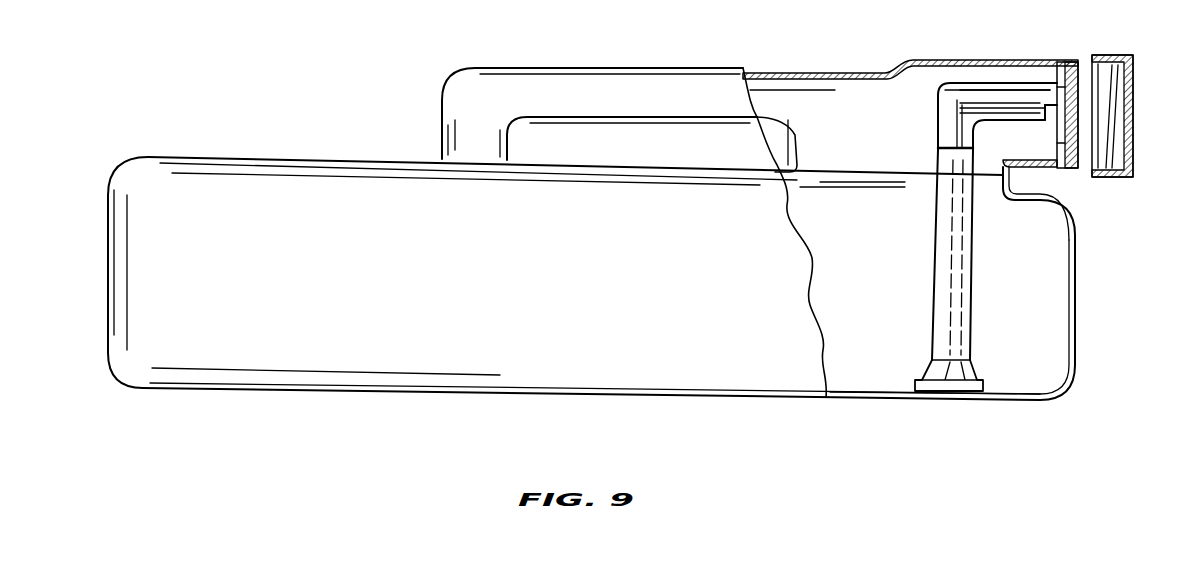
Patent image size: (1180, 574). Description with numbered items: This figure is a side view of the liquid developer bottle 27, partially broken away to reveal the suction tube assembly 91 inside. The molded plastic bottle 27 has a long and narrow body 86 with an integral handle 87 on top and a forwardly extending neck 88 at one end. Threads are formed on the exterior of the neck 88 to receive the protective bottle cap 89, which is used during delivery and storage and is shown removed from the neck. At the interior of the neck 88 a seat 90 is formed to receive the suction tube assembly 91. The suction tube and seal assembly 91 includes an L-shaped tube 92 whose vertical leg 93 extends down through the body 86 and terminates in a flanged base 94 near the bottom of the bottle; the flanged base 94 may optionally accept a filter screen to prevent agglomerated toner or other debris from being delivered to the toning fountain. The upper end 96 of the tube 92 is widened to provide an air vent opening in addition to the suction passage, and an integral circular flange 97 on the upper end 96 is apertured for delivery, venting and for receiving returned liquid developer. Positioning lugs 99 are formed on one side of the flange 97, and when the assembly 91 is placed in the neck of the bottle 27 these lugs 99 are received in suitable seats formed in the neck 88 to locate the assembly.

The liquid developer bottle 27 is at (372, 144).
The body 86 is at (486, 345).
The handle 87 is at (648, 92).
The neck 88 is at (1022, 62).
The protective bottle cap 89 is at (1133, 116).
The seat 90 is at (1038, 172).
The suction tube assembly 91 is at (926, 299).
The L-shaped tube 92 is at (938, 150).
The vertical leg 93 is at (948, 220).
The flanged base 94 is at (980, 381).
The upper end 96 is at (960, 96).
The circular flange 97 is at (1042, 60).
The positioning lugs 99 is at (1048, 115).